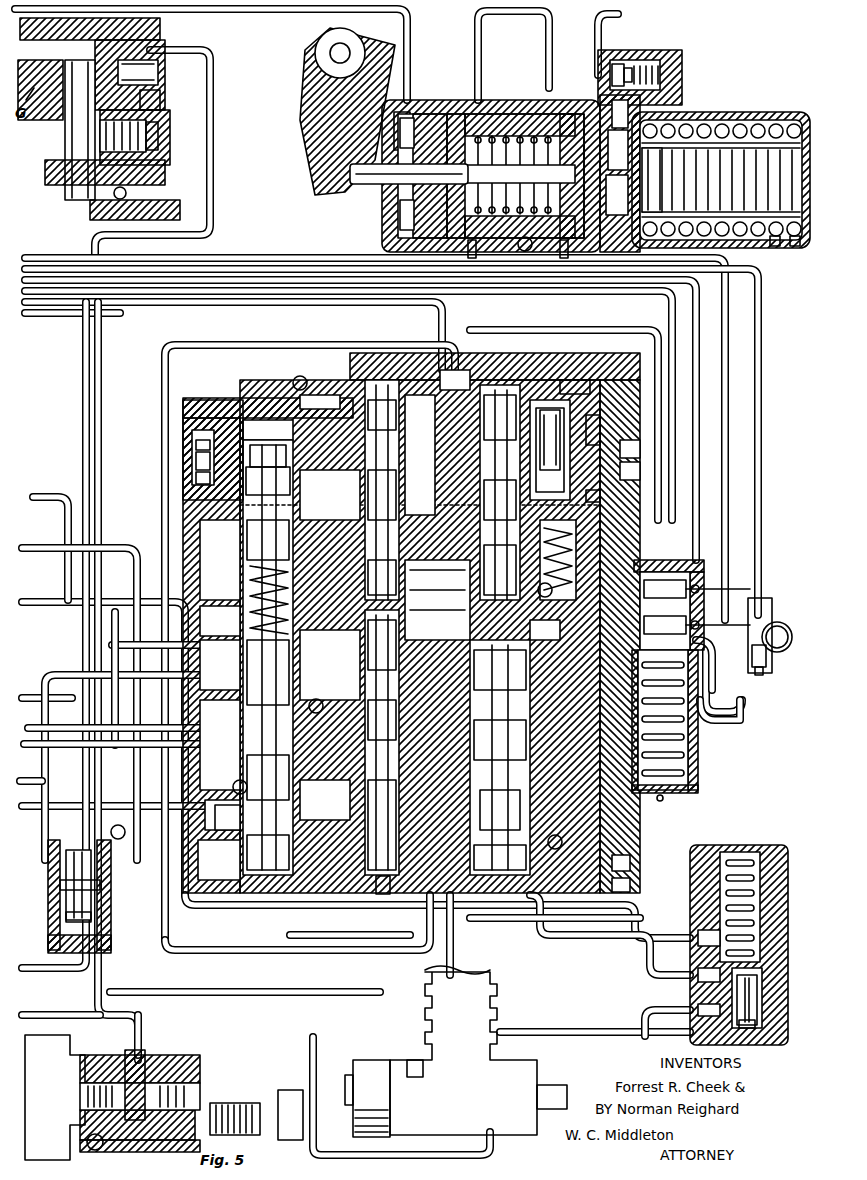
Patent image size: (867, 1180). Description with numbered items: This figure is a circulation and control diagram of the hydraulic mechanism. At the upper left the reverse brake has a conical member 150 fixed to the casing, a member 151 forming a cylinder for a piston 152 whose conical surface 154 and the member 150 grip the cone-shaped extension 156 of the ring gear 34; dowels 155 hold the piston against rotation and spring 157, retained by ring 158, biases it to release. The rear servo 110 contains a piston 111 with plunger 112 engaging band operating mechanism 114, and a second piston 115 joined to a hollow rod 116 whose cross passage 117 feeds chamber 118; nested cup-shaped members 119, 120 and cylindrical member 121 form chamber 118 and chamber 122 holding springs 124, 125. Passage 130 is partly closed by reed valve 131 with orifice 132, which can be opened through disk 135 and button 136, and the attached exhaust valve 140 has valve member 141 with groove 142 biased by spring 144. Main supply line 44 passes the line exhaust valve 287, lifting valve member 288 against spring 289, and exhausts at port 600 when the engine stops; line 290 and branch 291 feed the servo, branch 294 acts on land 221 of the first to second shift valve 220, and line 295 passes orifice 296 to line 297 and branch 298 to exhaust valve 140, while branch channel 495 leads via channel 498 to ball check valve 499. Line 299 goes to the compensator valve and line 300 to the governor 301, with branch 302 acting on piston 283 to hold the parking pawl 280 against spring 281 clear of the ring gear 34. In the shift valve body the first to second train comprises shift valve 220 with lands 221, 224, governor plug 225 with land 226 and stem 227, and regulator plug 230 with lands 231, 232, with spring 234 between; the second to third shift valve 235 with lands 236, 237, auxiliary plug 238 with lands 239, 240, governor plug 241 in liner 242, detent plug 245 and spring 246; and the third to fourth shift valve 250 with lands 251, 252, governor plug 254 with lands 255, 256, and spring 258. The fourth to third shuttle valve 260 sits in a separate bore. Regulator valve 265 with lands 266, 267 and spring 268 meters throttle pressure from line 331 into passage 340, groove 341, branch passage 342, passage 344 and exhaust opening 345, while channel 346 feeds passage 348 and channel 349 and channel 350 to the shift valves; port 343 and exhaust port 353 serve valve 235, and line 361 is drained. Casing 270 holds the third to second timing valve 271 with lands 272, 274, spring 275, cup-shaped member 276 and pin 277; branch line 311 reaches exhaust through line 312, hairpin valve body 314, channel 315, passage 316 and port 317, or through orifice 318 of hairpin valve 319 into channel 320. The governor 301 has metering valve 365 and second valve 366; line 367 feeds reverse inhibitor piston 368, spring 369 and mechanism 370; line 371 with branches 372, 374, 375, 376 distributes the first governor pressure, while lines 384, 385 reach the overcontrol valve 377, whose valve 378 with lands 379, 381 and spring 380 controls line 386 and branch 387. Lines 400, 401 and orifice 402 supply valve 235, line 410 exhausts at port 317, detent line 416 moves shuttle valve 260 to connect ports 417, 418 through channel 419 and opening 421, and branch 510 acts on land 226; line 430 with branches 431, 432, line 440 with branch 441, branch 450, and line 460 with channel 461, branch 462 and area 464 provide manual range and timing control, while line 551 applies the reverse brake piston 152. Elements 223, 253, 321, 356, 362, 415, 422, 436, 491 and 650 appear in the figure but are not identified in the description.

The ring gear 34 is at (58, 56).
The main supply line 44 is at (62, 540).
The rear servo 110 is at (385, 222).
The piston 111 is at (448, 190).
The plunger 112 is at (380, 186).
The band operating mechanism 114 is at (325, 60).
The piston 115 is at (692, 120).
The hollow rod 116 is at (628, 195).
The cross passage 117 is at (466, 166).
The chamber 118 is at (692, 244).
The cup-shaped member 119 is at (748, 246).
The cup-shaped member 120 is at (808, 118).
The cylindrical member 121 is at (728, 118).
The chamber 122 is at (752, 118).
The spring 124 is at (774, 248).
The spring 125 is at (794, 248).
The passage 130 is at (600, 110).
The reed valve 131 is at (448, 212).
The orifice 132 is at (634, 104).
The disk 135 is at (522, 175).
The button 136 is at (531, 176).
The exhaust valve 140 is at (690, 56).
The valve member 141 is at (616, 60).
The peripheral groove 142 is at (640, 58).
The spring 144 is at (662, 72).
The conical member 150 is at (95, 36).
The member 151 is at (165, 170).
The piston 152 is at (160, 100).
The conical surface 154 is at (124, 122).
The dowels 155 is at (160, 76).
The cone-shaped extension 156 is at (125, 44).
The spring 157 is at (160, 134).
The ring 158 is at (68, 130).
The first to second shift valve 220 is at (371, 742).
The land 221 is at (386, 707).
The port 223 is at (396, 572).
The land 224 is at (367, 662).
The governor plug 225 is at (364, 836).
The land 226 is at (364, 852).
The stem portion 227 is at (382, 729).
The regulator plug 230 is at (348, 480).
The land 231 is at (400, 542).
The land 232 is at (318, 410).
The spring 234 is at (426, 549).
The second to third shift valve 235 is at (577, 662).
The land 236 is at (546, 706).
The land 237 is at (540, 630).
The auxiliary valve 238 is at (567, 752).
The land 239 is at (540, 732).
The land 240 is at (540, 782).
The governor plug 241 is at (566, 917).
The aperture liner 242 is at (516, 757).
The third to second detent plug 245 is at (586, 462).
The spring 246 is at (594, 558).
The third to fourth shift valve 250 is at (185, 500).
The land 251 is at (205, 730).
The land 252 is at (292, 757).
The spool 253 is at (250, 645).
The governor plug 254 is at (219, 860).
The land 255 is at (268, 717).
The land 256 is at (268, 790).
The spring 258 is at (269, 614).
The fourth to third shuttle valve 260 is at (268, 456).
The regulator valve 265 is at (615, 508).
The land 266 is at (592, 545).
The land 267 is at (606, 428).
The spring 268 is at (586, 380).
The valve casing 270 is at (698, 558).
The third to second timing valve 271 is at (701, 607).
The land 272 is at (712, 590).
The land 274 is at (702, 712).
The spring 275 is at (700, 758).
The cup-shaped member 276 is at (700, 786).
The pin 277 is at (666, 798).
The parking pawl 280 is at (90, 1150).
The spring 281 is at (55, 1097).
The piston 283 is at (175, 1142).
The line exhaust valve 287 is at (100, 888).
The valve member 288 is at (92, 918).
The spring 289 is at (76, 806).
The line 290 is at (410, 38).
The branch line 291 is at (398, 110).
The branch line 294 is at (50, 733).
The branch line 295 is at (213, 556).
The orifice 296 is at (213, 596).
The passage 297 is at (34, 696).
The branch line 298 is at (556, 48).
The branch line 299 is at (62, 494).
The branch line 300 is at (490, 1150).
The governor 301 is at (414, 1058).
The branch line 302 is at (130, 1028).
The branch line 311 is at (78, 258).
The line 312 is at (766, 608).
The body 314 is at (780, 678).
The channel 315 is at (577, 627).
The passage 316 is at (355, 693).
The port 317 is at (324, 685).
The orifice 318 is at (780, 658).
The hairpin valve 319 is at (789, 697).
The channel 320 is at (716, 690).
The port 321 is at (376, 882).
The line 331 is at (46, 270).
The passage 340 is at (640, 470).
The groove 341 is at (550, 449).
The branch passage 342 is at (447, 492).
The port 343 is at (556, 560).
The passage 344 is at (640, 448).
The opening 345 is at (600, 412).
The channel 346 is at (496, 429).
The passage 348 is at (382, 490).
The channel 349 is at (296, 420).
The channel 350 is at (330, 495).
The port 353 is at (556, 588).
The line 356 is at (62, 302).
The line 361 is at (46, 314).
The port 362 is at (385, 395).
The metering valve 365 is at (372, 1068).
The second valve 366 is at (570, 1086).
The supply line 367 is at (365, 990).
The piston 368 is at (150, 1060).
The spring 369 is at (238, 1102).
The mechanism 370 is at (296, 1132).
The line 371 is at (495, 918).
The branch line 372 is at (298, 948).
The branch line 374 is at (318, 955).
The branch line 375 is at (455, 935).
The branch line 376 is at (590, 960).
The third to fourth overcontrol valve 377 is at (784, 918).
The valve 378 is at (784, 998).
The land 379 is at (784, 982).
The spring 380 is at (778, 844).
The land 381 is at (784, 1028).
The line 384 is at (565, 1030).
The continuation line 385 is at (642, 1016).
The line 386 is at (275, 908).
The branch line 387 is at (634, 908).
The branch line 400 is at (56, 552).
The branch line 401 is at (80, 672).
The orifice 402 is at (360, 650).
The line 410 is at (213, 668).
The line 415 is at (213, 643).
The line 416 is at (183, 420).
The port 417 is at (192, 440).
The port 418 is at (192, 478).
The channel 419 is at (192, 458).
The opening 421 is at (268, 540).
The plunger 422 is at (283, 477).
The line 430 is at (62, 672).
The branch 431 is at (213, 540).
The branch line 432 is at (210, 800).
The passage 436 is at (370, 530).
The line 440 is at (170, 376).
The branch line 441 is at (546, 331).
The branch line 450 is at (268, 262).
The line 460 is at (108, 935).
The channel 461 is at (622, 864).
The branch line 462 is at (630, 886).
The area 464 is at (694, 890).
The passage 491 is at (574, 467).
The branch channel 495 is at (424, 477).
The channel 498 is at (496, 452).
The ball check valve 499 is at (496, 409).
The branch line 510 is at (215, 818).
The line 551 is at (210, 56).
The port 600 is at (117, 826).
The line 650 is at (160, 304).